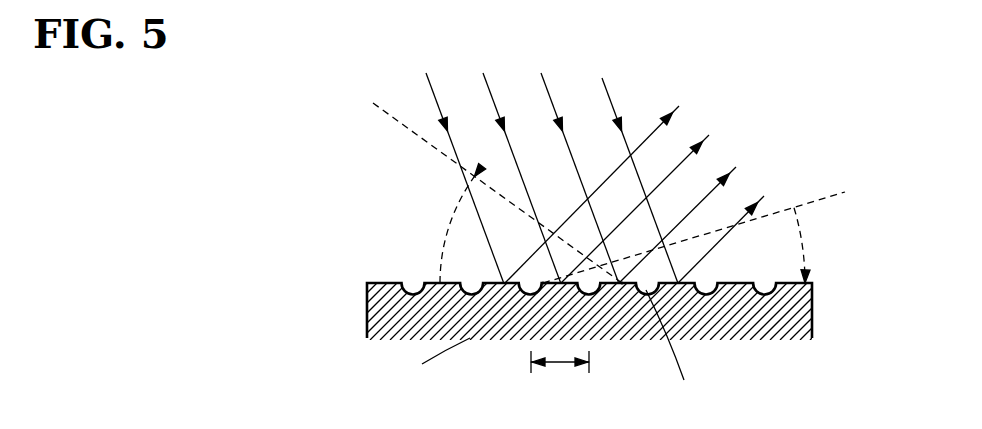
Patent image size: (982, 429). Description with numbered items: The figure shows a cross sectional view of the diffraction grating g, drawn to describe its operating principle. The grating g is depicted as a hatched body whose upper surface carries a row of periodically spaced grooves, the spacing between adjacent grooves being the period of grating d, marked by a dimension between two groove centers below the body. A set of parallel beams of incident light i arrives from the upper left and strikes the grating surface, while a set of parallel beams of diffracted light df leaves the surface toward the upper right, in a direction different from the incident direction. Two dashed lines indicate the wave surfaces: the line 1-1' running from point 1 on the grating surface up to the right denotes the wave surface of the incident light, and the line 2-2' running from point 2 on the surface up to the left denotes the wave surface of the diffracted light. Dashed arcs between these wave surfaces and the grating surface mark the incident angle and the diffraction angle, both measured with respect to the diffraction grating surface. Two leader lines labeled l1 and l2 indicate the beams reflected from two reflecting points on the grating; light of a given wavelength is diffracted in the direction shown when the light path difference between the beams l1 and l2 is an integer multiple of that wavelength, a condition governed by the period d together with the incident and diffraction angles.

The diffraction grating g is at (803, 313).
The incident light i is at (607, 95).
The diffracted light df is at (660, 122).
The wave surface of the incident light 1 is at (556, 297).
The wave surface of the diffracted light 2 is at (621, 299).
The wave surface of the incident light 1' is at (704, 232).
The wave surface of the diffracted light 2' is at (493, 179).
The period of grating d is at (560, 372).
The beam reflected from first reflecting point l1 is at (677, 352).
The beam reflected from second reflecting point l2 is at (437, 366).